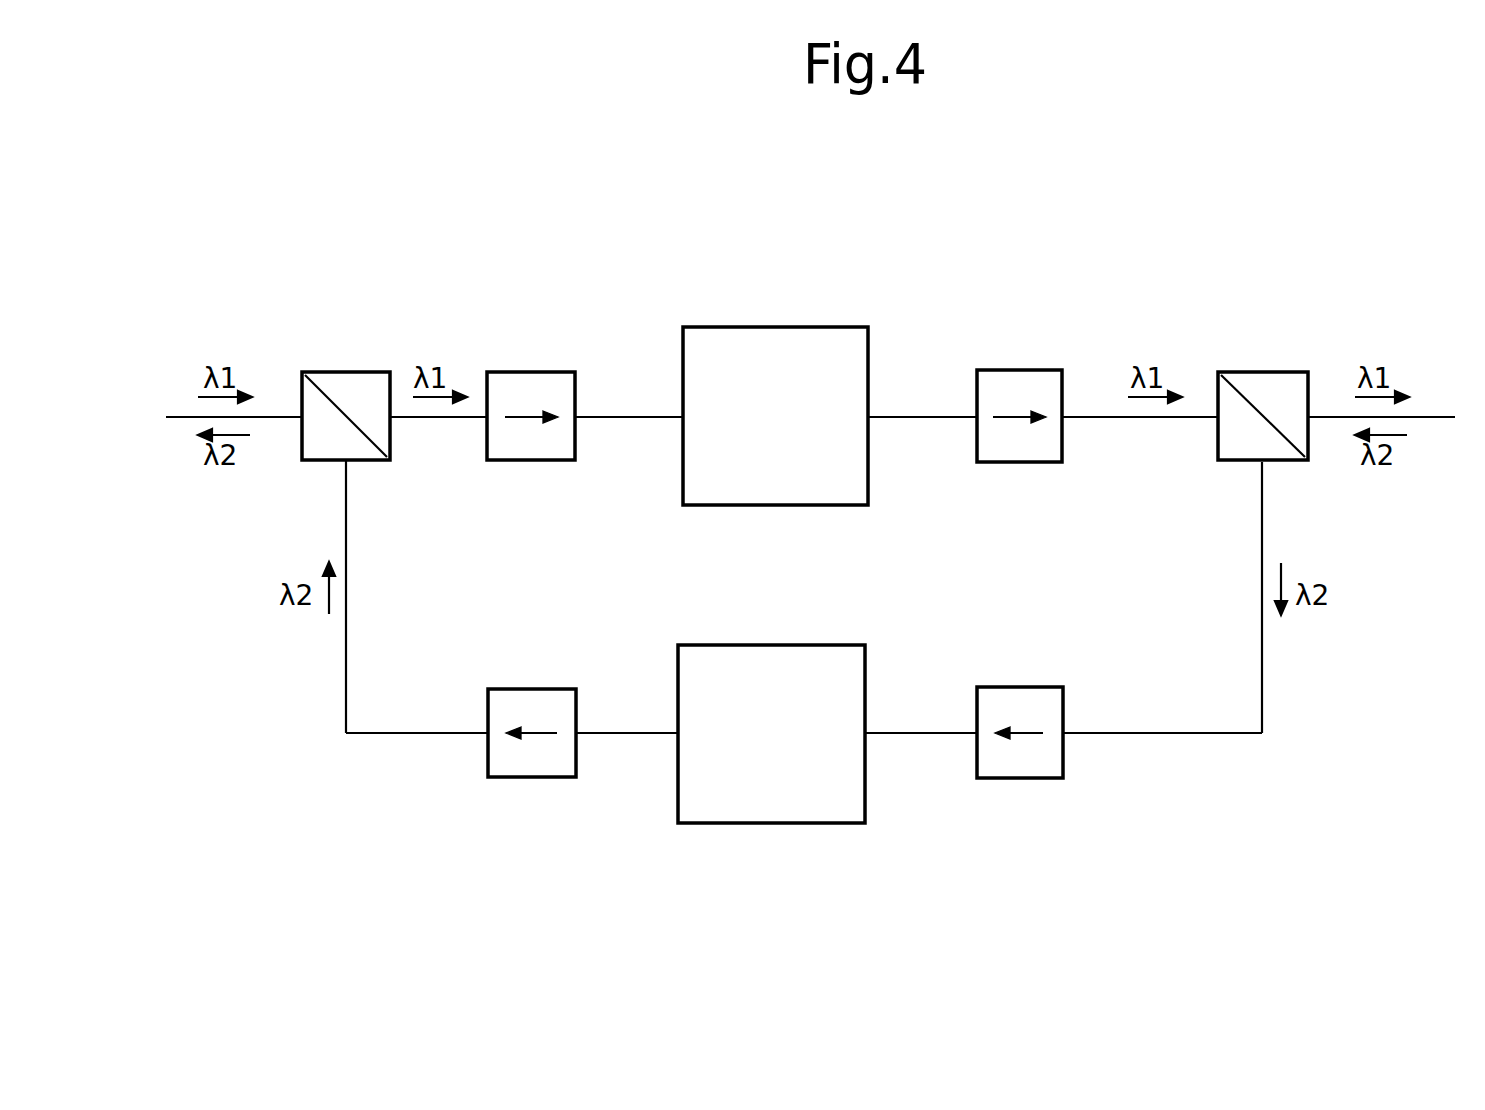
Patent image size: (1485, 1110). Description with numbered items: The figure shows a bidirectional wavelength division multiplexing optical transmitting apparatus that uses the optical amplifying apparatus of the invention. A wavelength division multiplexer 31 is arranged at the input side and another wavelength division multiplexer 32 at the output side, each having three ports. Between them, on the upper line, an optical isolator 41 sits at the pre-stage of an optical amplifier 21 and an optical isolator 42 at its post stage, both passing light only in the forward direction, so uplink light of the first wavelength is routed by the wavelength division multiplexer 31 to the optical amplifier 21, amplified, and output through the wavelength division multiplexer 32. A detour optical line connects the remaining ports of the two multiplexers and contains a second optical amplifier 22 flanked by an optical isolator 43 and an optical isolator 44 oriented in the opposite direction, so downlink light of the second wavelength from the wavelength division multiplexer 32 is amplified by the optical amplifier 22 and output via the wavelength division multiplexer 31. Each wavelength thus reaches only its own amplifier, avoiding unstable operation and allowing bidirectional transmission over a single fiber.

The optical amplifier 21 is at (775, 327).
The optical amplifier 22 is at (770, 645).
The wavelength division multiplexer 31 is at (350, 372).
The wavelength division multiplexer 32 is at (1258, 372).
The optical isolator 41 is at (520, 460).
The optical isolator 42 is at (1008, 462).
The optical isolator 43 is at (1008, 778).
The optical isolator 44 is at (521, 777).